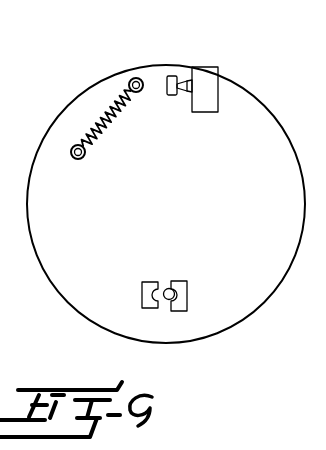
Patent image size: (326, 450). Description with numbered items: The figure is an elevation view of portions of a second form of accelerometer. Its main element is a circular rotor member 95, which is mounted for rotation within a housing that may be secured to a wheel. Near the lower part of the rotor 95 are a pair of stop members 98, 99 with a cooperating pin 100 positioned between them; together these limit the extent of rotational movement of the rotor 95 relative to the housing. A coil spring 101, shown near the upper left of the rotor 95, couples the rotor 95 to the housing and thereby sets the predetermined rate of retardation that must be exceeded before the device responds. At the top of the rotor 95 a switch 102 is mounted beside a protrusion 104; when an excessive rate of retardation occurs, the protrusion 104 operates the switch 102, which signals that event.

The rotor member 95 is at (235, 183).
The stop member 98 is at (143, 294).
The stop member 99 is at (226, 292).
The pin 100 is at (170, 289).
The spring 101 is at (103, 110).
The switch 102 is at (210, 77).
The protrusion 104 is at (171, 76).